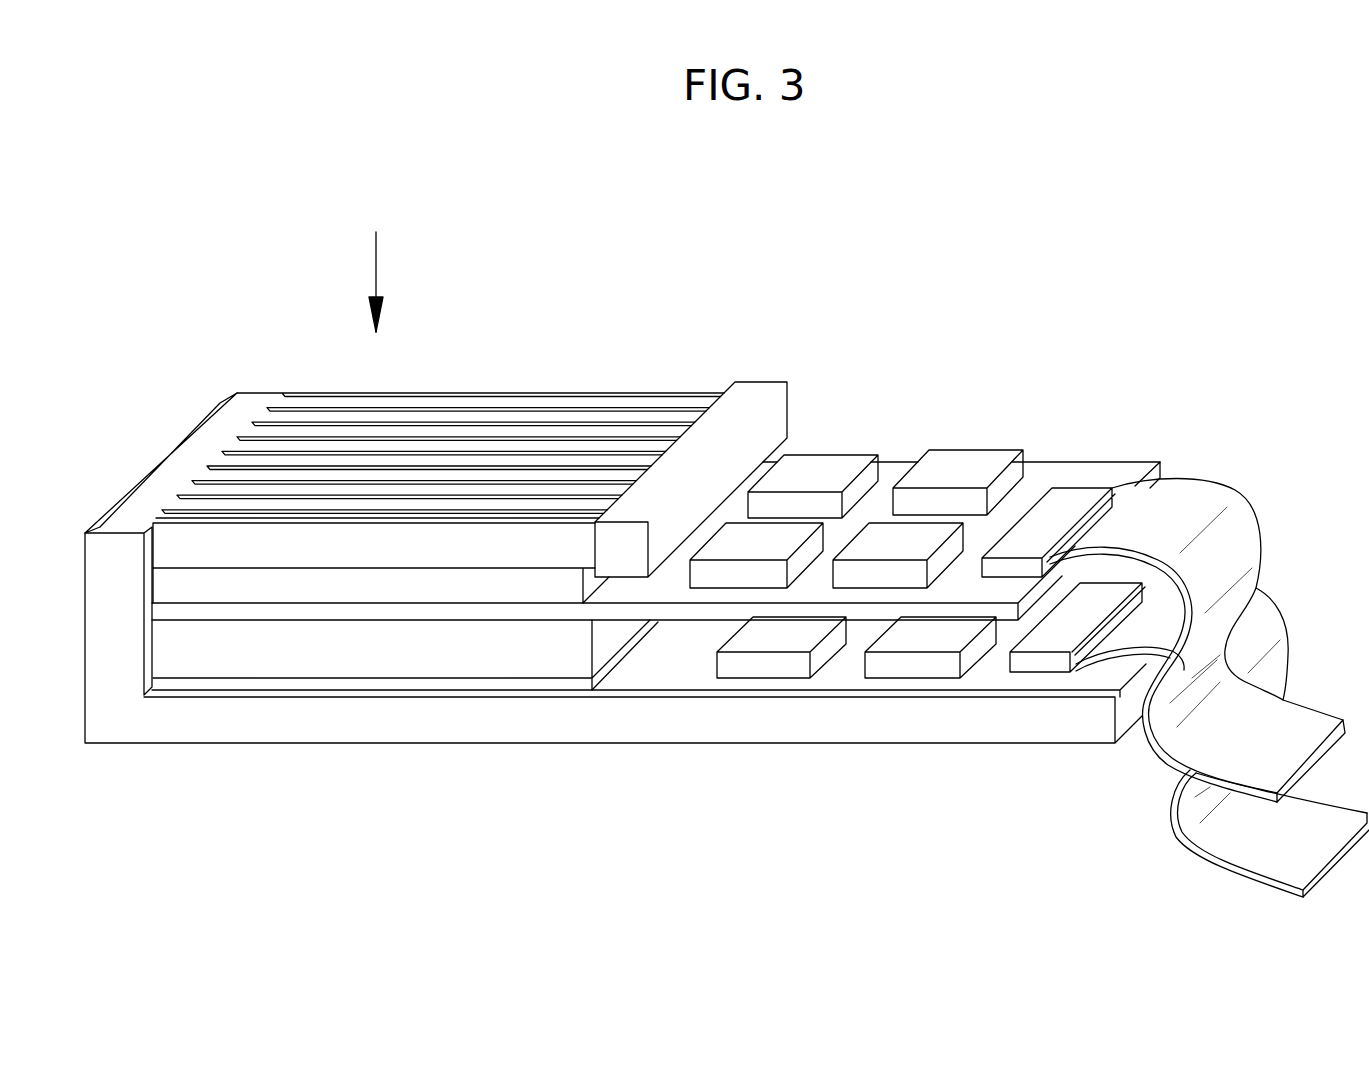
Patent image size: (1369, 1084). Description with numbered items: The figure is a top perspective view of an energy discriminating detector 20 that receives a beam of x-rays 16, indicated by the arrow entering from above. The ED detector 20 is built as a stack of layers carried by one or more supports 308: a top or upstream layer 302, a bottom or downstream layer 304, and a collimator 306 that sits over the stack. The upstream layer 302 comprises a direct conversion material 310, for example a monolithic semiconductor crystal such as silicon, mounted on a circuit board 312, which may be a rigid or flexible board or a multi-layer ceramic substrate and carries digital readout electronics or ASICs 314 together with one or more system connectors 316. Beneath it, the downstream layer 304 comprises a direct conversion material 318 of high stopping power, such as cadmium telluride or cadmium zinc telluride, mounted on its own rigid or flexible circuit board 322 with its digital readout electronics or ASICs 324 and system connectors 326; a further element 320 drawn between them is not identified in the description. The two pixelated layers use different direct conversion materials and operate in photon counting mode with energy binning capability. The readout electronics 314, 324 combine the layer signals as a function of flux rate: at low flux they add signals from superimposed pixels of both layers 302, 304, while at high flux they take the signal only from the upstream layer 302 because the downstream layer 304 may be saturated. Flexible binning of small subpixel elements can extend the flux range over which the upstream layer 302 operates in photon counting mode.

The beam of x-rays 16 is at (376, 262).
The ED detector 20 is at (770, 285).
The upstream layer 302 is at (168, 588).
The downstream layer 304 is at (173, 638).
The collimator 306 is at (610, 395).
The support 308 is at (127, 730).
The direct conversion material 310 is at (468, 590).
The circuit board 312 is at (1077, 462).
The digital readout electronics/ASICs 314 is at (962, 450).
The system connector 316 is at (1225, 484).
The direct conversion material 318 is at (357, 652).
The lower plate 320 is at (277, 683).
The circuit board 322 is at (680, 658).
The digital readout electronics/ASICs 324 is at (908, 668).
The system connector 326 is at (1237, 873).